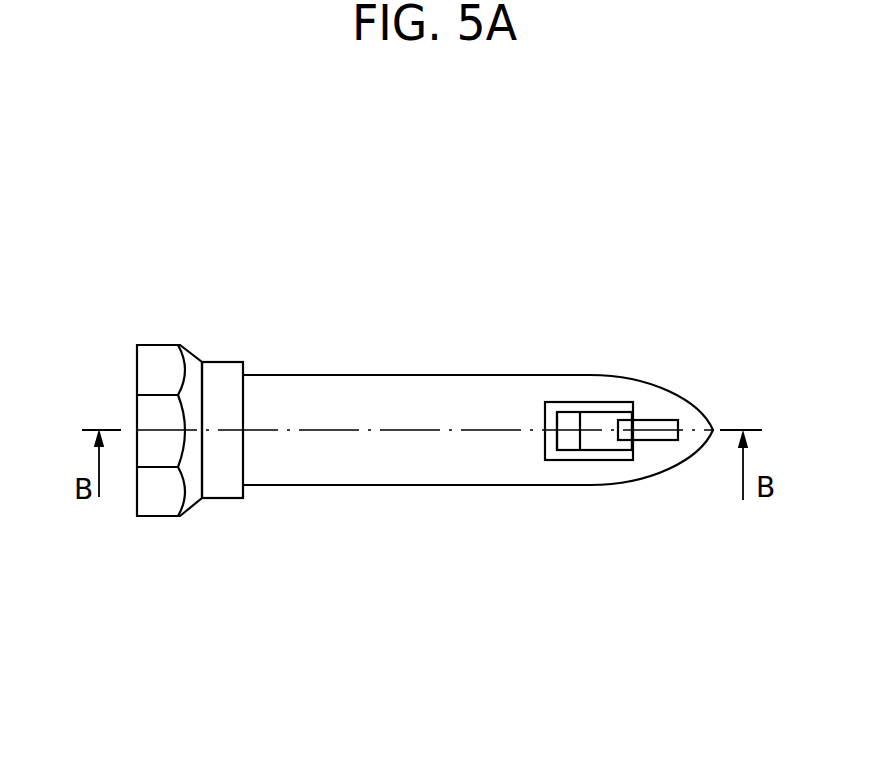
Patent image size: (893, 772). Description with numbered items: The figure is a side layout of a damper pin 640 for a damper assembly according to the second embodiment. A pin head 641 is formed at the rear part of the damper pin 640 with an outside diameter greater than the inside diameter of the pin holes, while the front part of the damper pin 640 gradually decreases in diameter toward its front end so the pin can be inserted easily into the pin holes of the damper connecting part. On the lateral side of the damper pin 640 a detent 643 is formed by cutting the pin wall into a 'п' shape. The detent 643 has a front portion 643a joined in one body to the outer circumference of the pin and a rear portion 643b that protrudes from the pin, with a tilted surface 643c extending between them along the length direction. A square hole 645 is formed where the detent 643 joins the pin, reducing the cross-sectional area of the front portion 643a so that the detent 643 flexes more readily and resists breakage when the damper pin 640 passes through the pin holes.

The damper pin 640 is at (413, 352).
The pin head 641 is at (158, 355).
The detent 643 is at (597, 458).
The front portion 643a is at (637, 414).
The rear portion 643b is at (567, 440).
The tilted surface 643c is at (593, 423).
The hole 645 is at (657, 435).